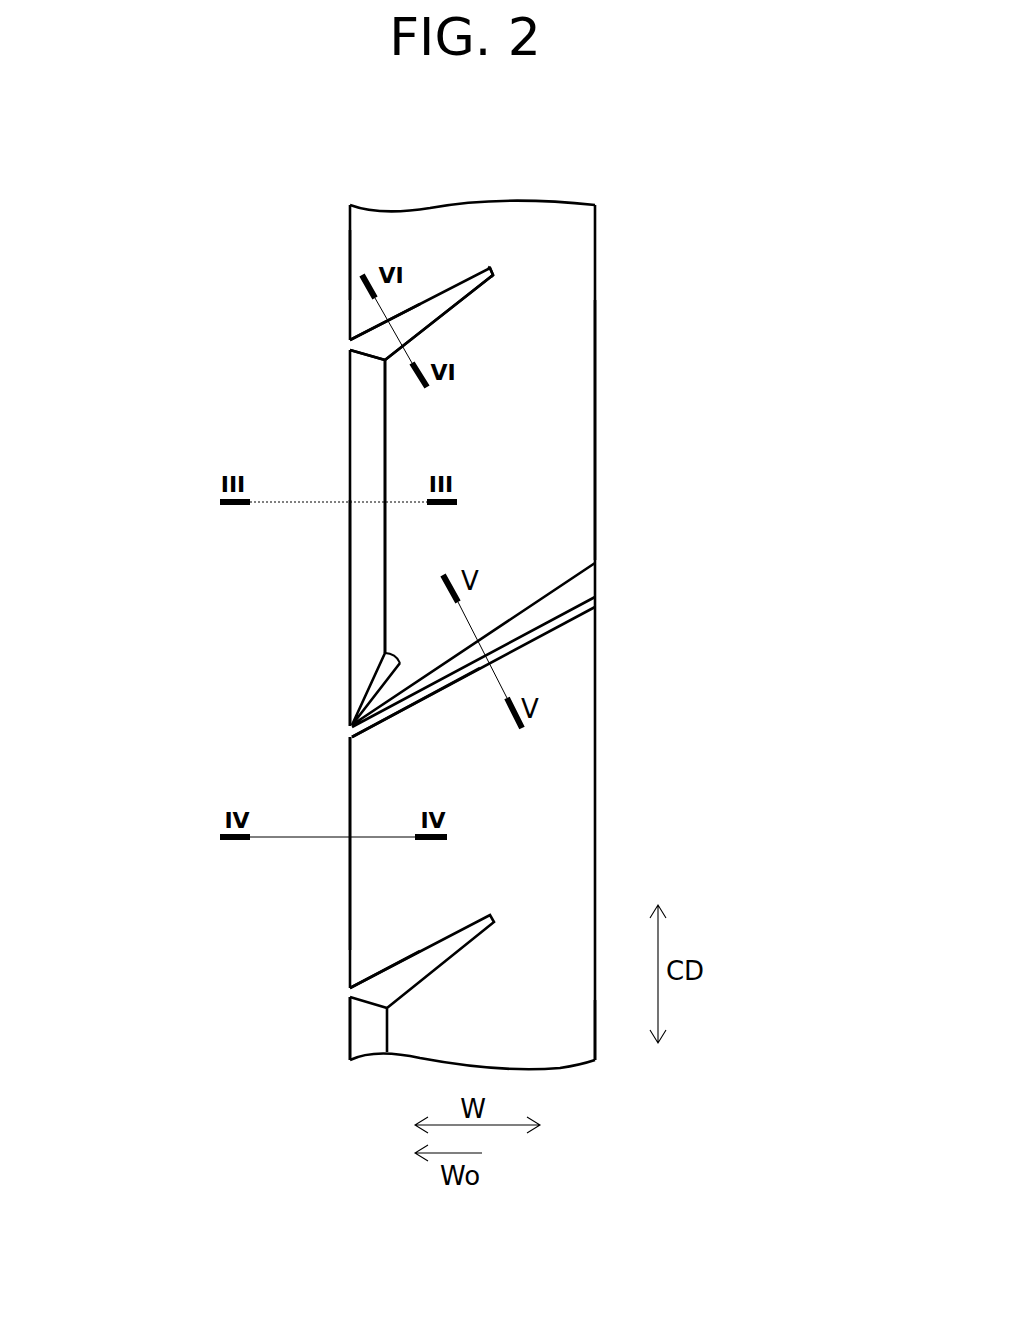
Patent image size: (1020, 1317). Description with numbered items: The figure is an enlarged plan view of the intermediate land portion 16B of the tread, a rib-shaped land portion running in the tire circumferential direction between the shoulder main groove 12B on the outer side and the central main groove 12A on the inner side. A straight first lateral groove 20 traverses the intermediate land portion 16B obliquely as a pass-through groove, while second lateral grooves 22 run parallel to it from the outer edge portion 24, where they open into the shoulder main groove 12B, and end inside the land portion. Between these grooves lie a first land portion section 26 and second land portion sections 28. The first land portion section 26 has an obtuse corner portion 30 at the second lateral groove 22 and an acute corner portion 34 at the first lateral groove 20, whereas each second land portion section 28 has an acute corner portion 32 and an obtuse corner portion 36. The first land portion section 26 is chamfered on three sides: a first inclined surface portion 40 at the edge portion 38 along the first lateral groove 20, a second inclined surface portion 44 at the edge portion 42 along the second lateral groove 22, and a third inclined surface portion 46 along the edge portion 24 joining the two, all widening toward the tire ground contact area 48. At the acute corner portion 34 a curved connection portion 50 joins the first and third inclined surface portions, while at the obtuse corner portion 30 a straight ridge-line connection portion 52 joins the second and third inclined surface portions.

The intermediate land portion 16B is at (498, 159).
The second lateral groove 22 is at (440, 288).
The edge portion 42 is at (450, 297).
The second land portion section 28 is at (402, 237).
The acute corner portion 32 is at (363, 323).
The second inclined surface portion 44 is at (412, 328).
The connection portion 52 is at (365, 358).
The obtuse corner portion 30 is at (395, 368).
The tire ground contact area 48 is at (517, 418).
The third inclined surface portion 46 is at (363, 452).
The first land portion section 26 is at (400, 518).
The edge portion 24 is at (350, 568).
The first inclined surface portion 40 is at (523, 598).
The acute corner portion 34 is at (398, 650).
The edge portion 38 is at (553, 630).
The connection portion 50 is at (395, 672).
The first lateral groove 20 is at (435, 695).
The obtuse corner portion 36 is at (350, 742).
The shoulder main groove 12B is at (330, 1035).
The central main groove 12A is at (615, 1025).